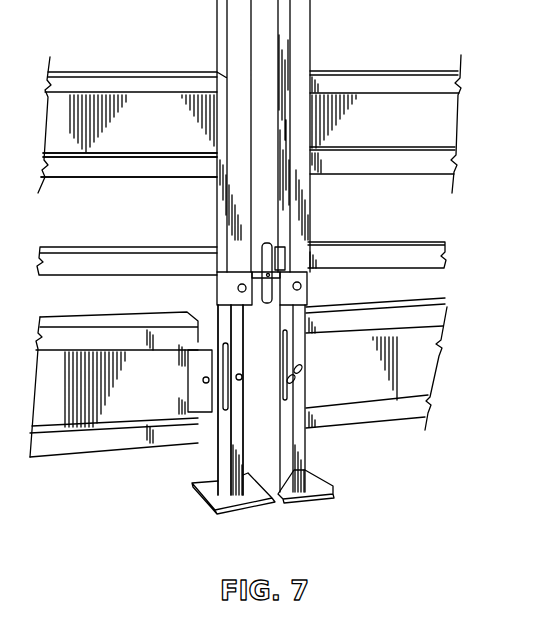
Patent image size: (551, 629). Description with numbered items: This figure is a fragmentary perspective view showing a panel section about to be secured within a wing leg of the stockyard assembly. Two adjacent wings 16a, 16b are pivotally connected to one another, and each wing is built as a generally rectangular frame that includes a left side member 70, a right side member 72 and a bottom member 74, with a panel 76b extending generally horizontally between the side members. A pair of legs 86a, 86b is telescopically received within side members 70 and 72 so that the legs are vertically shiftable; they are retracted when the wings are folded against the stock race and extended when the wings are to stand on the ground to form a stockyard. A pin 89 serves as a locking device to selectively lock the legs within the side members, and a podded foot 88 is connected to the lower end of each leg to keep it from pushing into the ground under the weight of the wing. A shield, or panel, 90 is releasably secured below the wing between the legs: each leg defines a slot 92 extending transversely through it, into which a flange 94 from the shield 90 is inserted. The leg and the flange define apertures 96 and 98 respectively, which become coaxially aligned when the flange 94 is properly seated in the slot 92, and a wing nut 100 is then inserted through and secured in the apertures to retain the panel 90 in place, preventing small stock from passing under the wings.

The left side member 70 is at (303, 33).
The right side member 72 is at (222, 50).
The bottom member 74 is at (118, 267).
The panel 76b is at (122, 170).
The wing 16a is at (202, 238).
The wing 16b is at (397, 232).
The pin 89 is at (239, 288).
The leg 86a is at (298, 390).
The leg 86b is at (238, 323).
The podded foot 88 is at (309, 503).
The panel (shield) 90 is at (102, 450).
The slot 92 is at (232, 395).
The flange 94 is at (203, 397).
The aperture 96 is at (243, 377).
The aperture 98 is at (203, 379).
The wing nut 100 is at (303, 366).